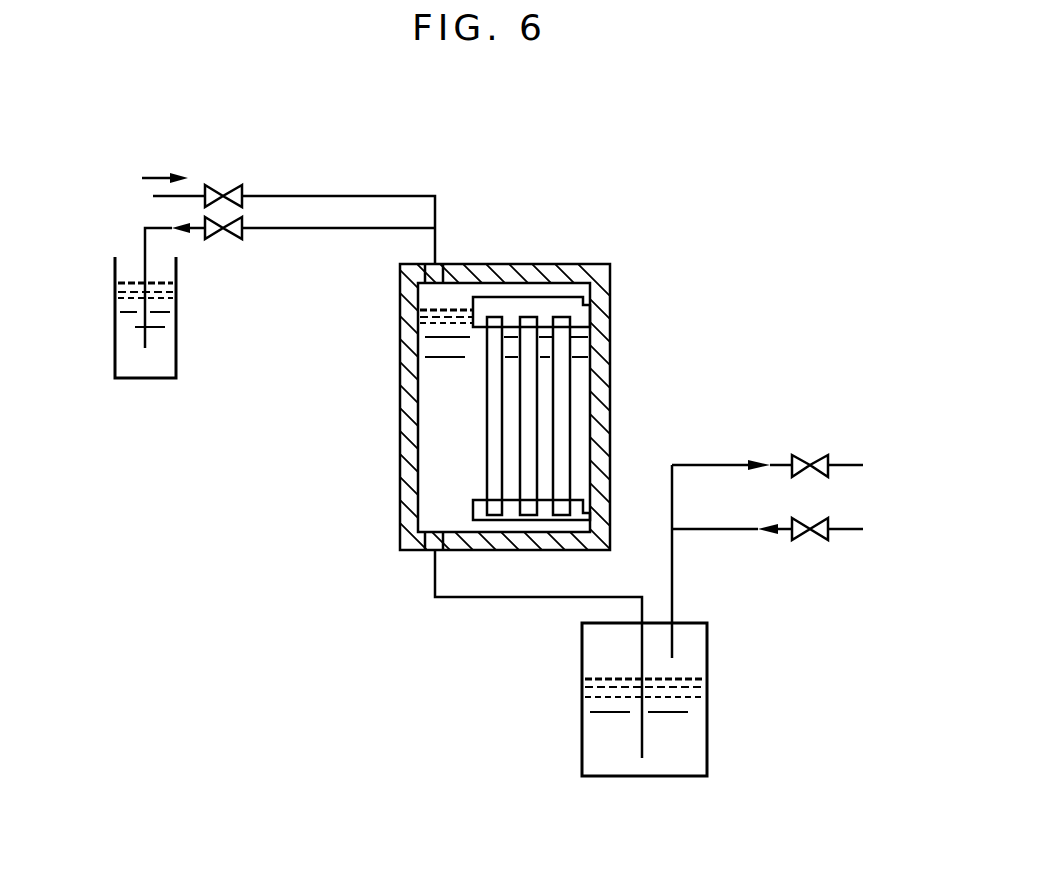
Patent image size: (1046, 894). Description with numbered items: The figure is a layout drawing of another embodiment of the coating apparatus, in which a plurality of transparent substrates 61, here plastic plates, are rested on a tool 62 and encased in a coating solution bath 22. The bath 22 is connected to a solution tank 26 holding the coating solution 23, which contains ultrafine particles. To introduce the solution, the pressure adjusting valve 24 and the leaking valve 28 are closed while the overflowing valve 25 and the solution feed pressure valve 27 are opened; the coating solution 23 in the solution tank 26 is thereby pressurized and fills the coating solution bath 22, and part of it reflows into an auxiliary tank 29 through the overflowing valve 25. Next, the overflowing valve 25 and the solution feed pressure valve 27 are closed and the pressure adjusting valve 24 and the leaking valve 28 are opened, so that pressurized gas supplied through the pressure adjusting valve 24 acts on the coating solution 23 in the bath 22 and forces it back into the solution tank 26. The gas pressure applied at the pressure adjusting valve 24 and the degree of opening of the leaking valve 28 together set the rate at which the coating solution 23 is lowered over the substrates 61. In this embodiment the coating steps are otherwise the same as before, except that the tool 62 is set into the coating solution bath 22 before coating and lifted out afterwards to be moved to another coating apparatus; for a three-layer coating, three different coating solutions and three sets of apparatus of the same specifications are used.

The coating solution bath 22 is at (600, 333).
The coating solution 23 is at (430, 425).
The pressure adjusting valve 24 is at (228, 188).
The overflowing valve 25 is at (227, 240).
The solution tank 26 is at (685, 737).
The solution feed pressure valve 27 is at (807, 537).
The leaking valve 28 is at (807, 458).
The auxiliary tank 29 is at (123, 329).
The transparent substrates 61 is at (525, 378).
The tool 62 is at (480, 518).